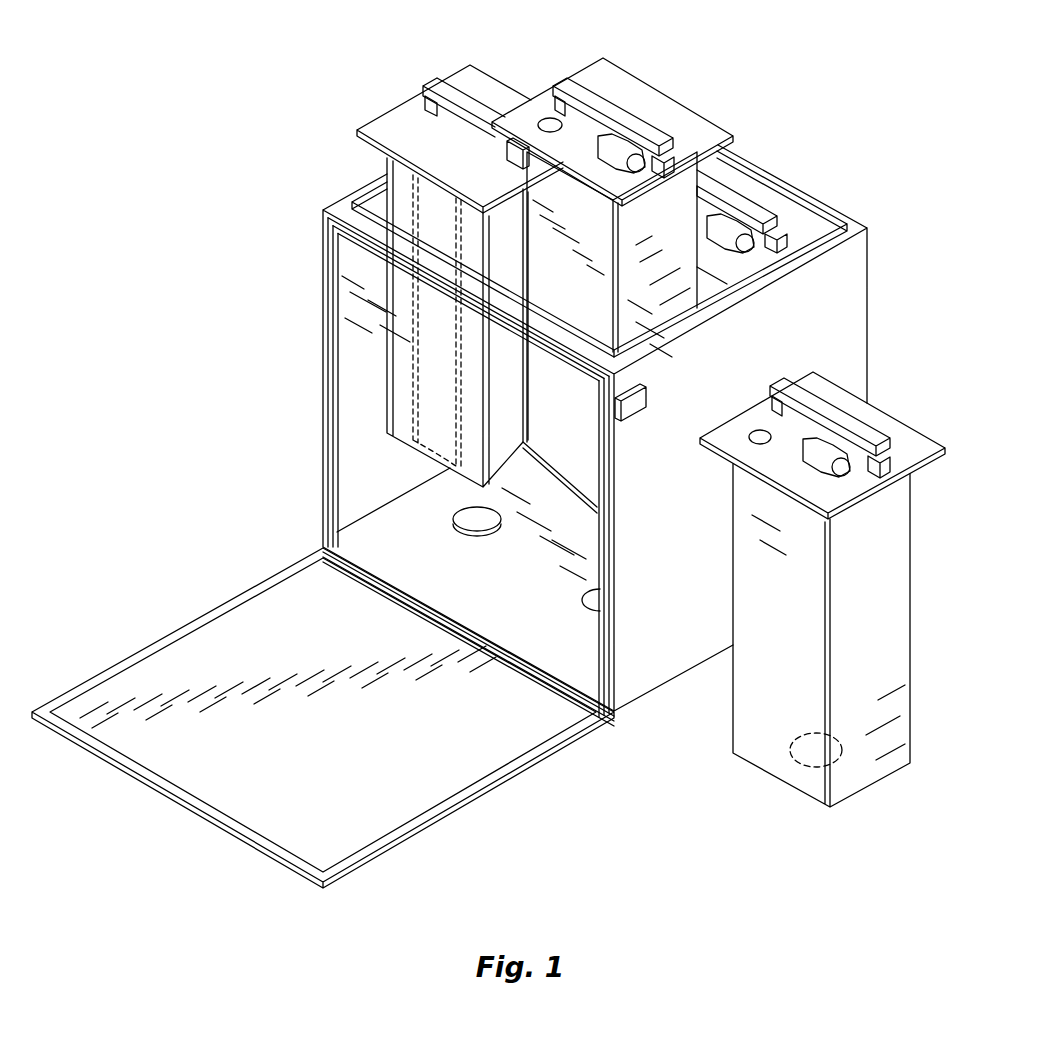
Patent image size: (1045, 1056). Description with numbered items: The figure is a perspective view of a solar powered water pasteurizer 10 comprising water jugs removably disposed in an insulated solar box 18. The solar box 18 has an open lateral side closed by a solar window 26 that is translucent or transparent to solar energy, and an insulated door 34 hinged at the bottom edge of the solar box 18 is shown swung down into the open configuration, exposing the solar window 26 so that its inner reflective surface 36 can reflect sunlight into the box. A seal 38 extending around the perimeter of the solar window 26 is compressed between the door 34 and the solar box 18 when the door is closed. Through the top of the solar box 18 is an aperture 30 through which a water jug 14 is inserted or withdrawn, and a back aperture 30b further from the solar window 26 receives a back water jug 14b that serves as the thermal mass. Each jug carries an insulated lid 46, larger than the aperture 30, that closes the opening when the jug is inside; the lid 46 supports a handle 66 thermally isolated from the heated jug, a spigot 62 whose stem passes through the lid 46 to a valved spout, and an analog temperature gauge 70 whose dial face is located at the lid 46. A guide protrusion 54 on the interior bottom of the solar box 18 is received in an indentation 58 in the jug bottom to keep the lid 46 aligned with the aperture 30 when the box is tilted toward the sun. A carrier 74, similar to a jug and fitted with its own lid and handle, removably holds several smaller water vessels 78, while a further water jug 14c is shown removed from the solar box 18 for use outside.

The solar powered water pasteurizer 10 is at (613, 760).
The water jug 14 is at (617, 80).
The back water jug 14b is at (748, 178).
The water jug 14c is at (753, 705).
The solar box 18 is at (855, 302).
The solar window 26 is at (360, 372).
The aperture 30 is at (380, 205).
The back aperture 30b is at (827, 210).
The insulated door 34 is at (258, 858).
The reflective surface 36 is at (160, 690).
The seal 38 is at (328, 437).
The lid 46 is at (913, 443).
The protrusion 54 is at (450, 522).
The indentation 58 is at (790, 756).
The spigot 62 is at (617, 163).
The handle 66 is at (635, 142).
The analog temperature gauge 70 is at (760, 440).
The carrier 74 is at (476, 77).
The water vessel 78 is at (418, 200).